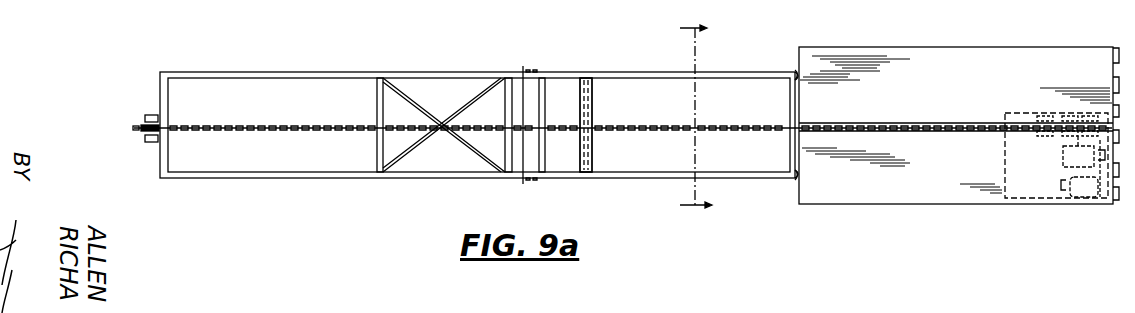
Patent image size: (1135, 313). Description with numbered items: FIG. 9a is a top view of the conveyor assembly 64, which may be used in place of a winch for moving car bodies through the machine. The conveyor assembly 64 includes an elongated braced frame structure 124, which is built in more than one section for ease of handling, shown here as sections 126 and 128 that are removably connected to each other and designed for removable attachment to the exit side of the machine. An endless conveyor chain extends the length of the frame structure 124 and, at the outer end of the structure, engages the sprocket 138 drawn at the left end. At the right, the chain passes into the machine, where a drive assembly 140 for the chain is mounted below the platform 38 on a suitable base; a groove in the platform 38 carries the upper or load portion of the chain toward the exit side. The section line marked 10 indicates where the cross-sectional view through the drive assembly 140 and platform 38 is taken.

The conveyor assembly 64 is at (430, 68).
The elongated braced frame structure 124 is at (416, 181).
The frame section 126 is at (288, 180).
The frame section 128 is at (608, 178).
The sprocket 138 is at (138, 128).
The platform 38 is at (915, 198).
The drive assembly 140 is at (1058, 172).
The section line 10- 10 is at (696, 120).